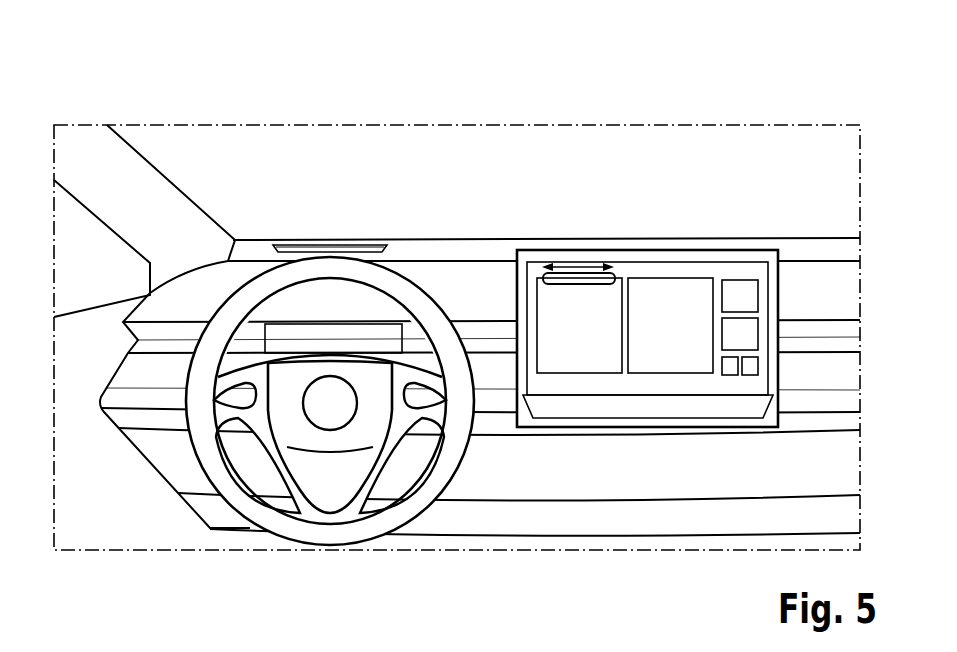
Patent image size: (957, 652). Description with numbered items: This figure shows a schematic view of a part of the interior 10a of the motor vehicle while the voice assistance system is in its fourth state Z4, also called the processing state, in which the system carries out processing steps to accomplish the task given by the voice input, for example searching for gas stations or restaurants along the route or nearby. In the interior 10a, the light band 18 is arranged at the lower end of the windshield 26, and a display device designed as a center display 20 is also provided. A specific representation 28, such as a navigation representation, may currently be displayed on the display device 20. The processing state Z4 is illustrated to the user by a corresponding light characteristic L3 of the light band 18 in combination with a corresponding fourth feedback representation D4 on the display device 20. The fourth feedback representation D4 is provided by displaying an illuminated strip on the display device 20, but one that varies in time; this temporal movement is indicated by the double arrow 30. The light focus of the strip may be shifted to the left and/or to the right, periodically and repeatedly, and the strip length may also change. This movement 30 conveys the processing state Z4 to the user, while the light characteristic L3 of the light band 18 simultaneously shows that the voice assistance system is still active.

The fourth state Z4 is at (453, 106).
The light characteristic L3 is at (293, 243).
The light band 18 is at (365, 245).
The windshield 26 is at (410, 148).
The interior 10a is at (568, 164).
The fourth feedback representation D4 is at (546, 267).
The double arrow 30 is at (590, 267).
The center display 20 is at (670, 250).
The specific representation 28 is at (732, 295).